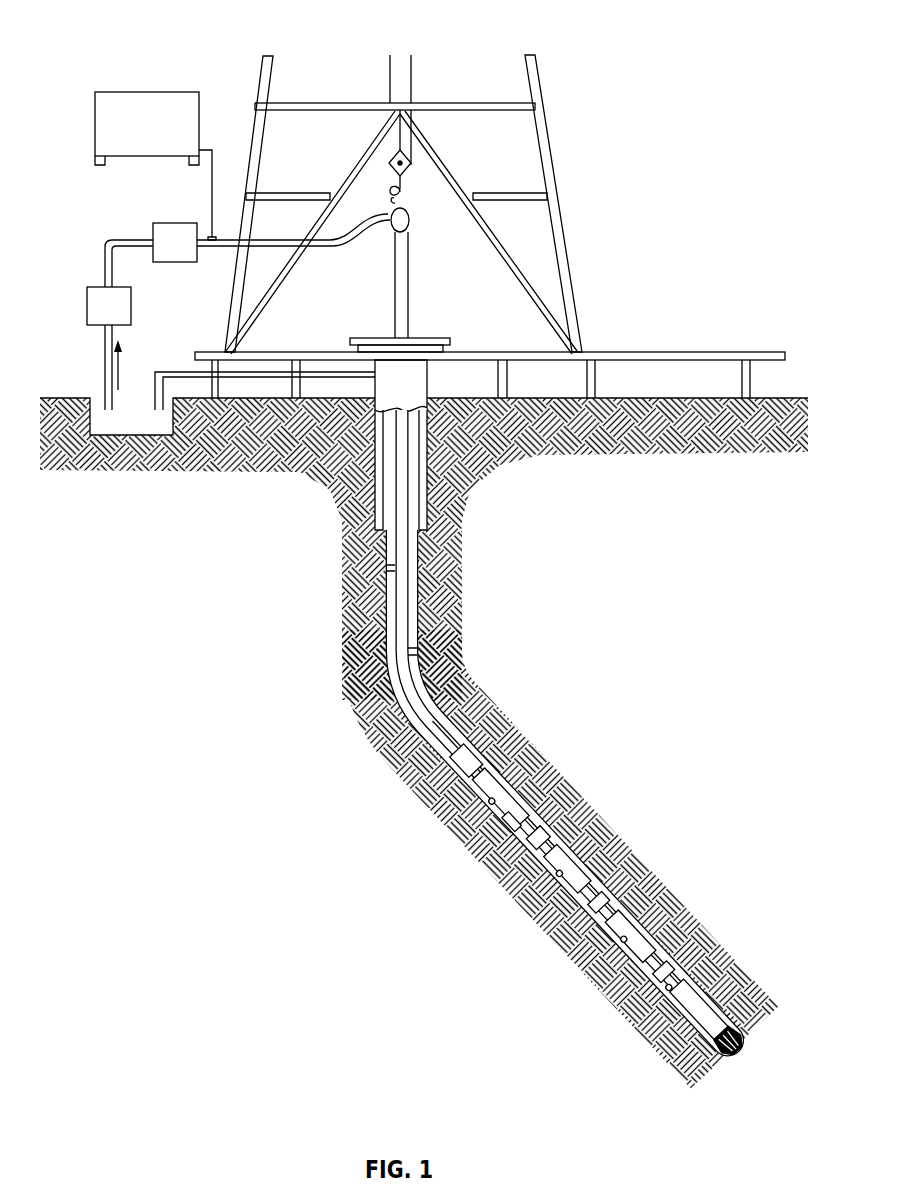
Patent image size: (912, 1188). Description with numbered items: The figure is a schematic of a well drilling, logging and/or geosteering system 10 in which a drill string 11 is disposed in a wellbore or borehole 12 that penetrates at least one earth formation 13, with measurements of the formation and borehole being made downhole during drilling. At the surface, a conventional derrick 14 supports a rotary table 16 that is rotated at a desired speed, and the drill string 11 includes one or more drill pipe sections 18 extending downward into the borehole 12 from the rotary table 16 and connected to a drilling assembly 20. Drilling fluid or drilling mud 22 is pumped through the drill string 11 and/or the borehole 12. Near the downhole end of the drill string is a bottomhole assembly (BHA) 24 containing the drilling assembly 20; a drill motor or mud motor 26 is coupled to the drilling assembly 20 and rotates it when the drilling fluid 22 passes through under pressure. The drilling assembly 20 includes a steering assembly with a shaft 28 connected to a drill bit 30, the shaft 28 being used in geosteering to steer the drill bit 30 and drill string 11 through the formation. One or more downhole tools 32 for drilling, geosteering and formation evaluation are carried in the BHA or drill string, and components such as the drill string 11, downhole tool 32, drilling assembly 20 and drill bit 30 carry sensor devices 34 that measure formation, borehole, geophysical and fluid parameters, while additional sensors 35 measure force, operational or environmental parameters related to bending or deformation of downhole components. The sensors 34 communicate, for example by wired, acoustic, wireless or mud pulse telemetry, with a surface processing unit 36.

The well drilling, logging and/or geosteering system 10 is at (409, 190).
The drill string 11 is at (416, 576).
The wellbore or borehole 12 is at (418, 682).
The earth formation 13 is at (550, 437).
The derrick 14 is at (562, 207).
The rotary table 16 is at (427, 339).
The drill pipe sections 18 is at (394, 606).
The drilling assembly 20 is at (759, 1022).
The drilling fluid or drilling mud 22 is at (96, 428).
The bottomhole assembly (BHA) 24 is at (742, 923).
The drill motor or mud motor 26 is at (495, 794).
The shaft 28 is at (690, 1042).
The drill bit 30 is at (750, 1054).
The downhole tool 32 is at (646, 927).
The sensor devices / parameter sensors 34 is at (601, 886).
The sensors 35 is at (469, 829).
The surface processing unit 36 is at (143, 92).